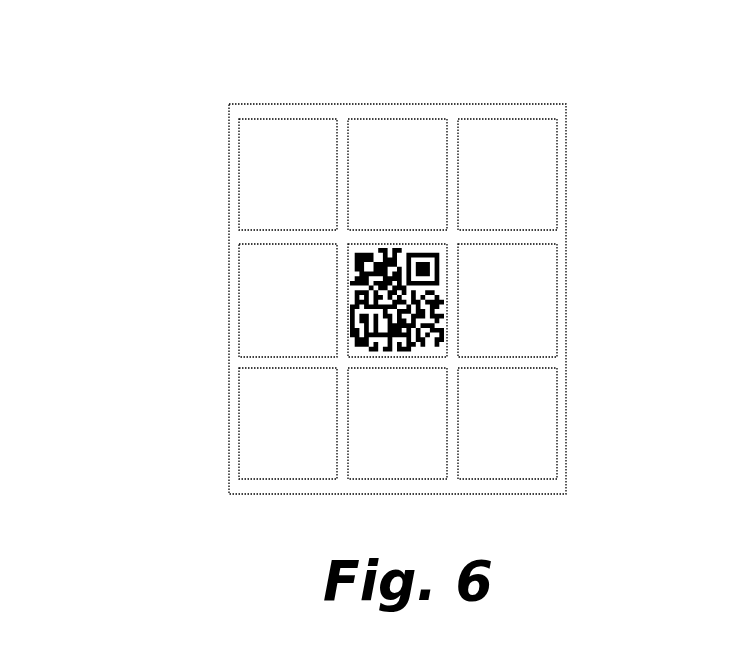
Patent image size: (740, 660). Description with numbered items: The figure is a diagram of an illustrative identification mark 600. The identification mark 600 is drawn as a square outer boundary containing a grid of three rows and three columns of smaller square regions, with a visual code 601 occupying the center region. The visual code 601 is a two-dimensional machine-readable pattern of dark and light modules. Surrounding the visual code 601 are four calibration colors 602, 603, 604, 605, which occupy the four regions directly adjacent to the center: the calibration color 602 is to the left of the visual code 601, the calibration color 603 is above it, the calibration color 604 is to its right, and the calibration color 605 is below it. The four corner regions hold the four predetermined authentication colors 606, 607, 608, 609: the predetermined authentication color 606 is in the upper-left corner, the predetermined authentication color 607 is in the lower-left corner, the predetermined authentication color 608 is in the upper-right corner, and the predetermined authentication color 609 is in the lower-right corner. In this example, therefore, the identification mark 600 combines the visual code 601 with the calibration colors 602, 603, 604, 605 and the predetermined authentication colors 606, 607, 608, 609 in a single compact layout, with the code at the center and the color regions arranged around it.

The identification mark 600 is at (117, 81).
The visual code 601 is at (445, 343).
The calibration color 602 is at (260, 305).
The calibration color 603 is at (380, 142).
The calibration color 604 is at (535, 295).
The calibration color 605 is at (425, 448).
The predetermined authentication color 606 is at (272, 190).
The predetermined authentication color 607 is at (260, 437).
The predetermined authentication color 608 is at (535, 159).
The predetermined authentication color 609 is at (534, 455).